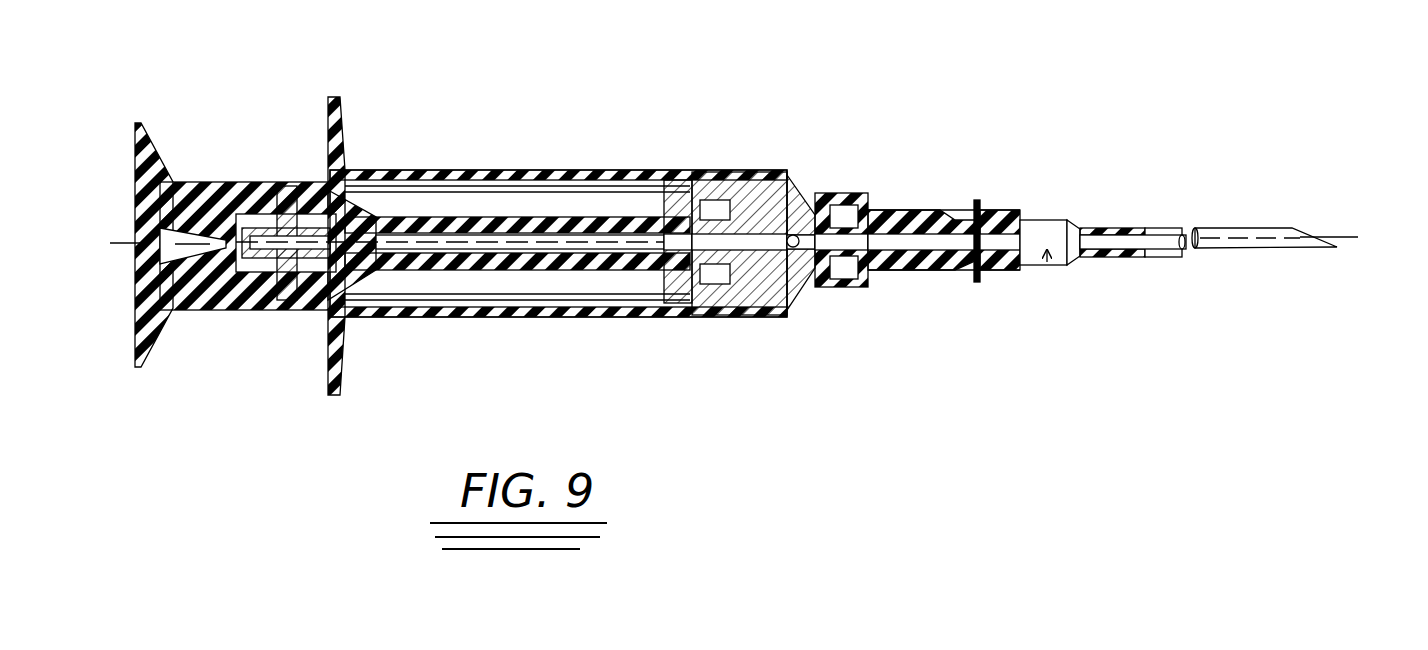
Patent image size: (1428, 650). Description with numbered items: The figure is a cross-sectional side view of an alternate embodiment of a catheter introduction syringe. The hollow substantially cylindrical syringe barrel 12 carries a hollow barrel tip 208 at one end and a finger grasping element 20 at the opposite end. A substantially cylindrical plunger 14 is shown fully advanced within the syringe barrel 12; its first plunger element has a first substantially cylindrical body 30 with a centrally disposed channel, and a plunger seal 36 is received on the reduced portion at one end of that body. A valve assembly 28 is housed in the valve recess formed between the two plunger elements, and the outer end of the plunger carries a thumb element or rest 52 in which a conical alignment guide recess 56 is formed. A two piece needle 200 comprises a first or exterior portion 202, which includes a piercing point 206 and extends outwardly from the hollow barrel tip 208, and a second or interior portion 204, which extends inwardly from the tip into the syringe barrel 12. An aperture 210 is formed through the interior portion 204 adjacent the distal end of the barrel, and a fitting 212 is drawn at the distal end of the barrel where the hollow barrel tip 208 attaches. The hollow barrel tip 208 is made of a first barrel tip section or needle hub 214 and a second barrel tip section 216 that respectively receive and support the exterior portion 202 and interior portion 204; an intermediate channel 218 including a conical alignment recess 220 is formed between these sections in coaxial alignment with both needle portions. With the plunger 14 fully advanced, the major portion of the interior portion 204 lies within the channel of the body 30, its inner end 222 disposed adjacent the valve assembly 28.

The syringe barrel 12 is at (422, 134).
The plunger 14 is at (200, 146).
The finger grasping element 20 is at (336, 398).
The valve assembly 28 is at (278, 165).
The first substantially cylindrical body 30 is at (535, 232).
The plunger seal 36 is at (758, 174).
The thumb element or rest 52 is at (140, 360).
The conical alignment guide recess 56 is at (152, 257).
The two piece needle 200 is at (1005, 190).
The first or exterior portion 202 is at (1215, 228).
The second or interior portion 204 is at (680, 232).
The piercing point 206 is at (1337, 248).
The hollow barrel tip 208 is at (1024, 282).
The aperture 210 is at (790, 172).
The connector fitting 212 is at (812, 288).
The first barrel tip section or needle hub 214 is at (1060, 208).
The second barrel tip section 216 is at (900, 272).
The intermediate channel 218 is at (1047, 268).
The conical alignment recess 220 is at (1070, 258).
The inner end 222 is at (424, 246).